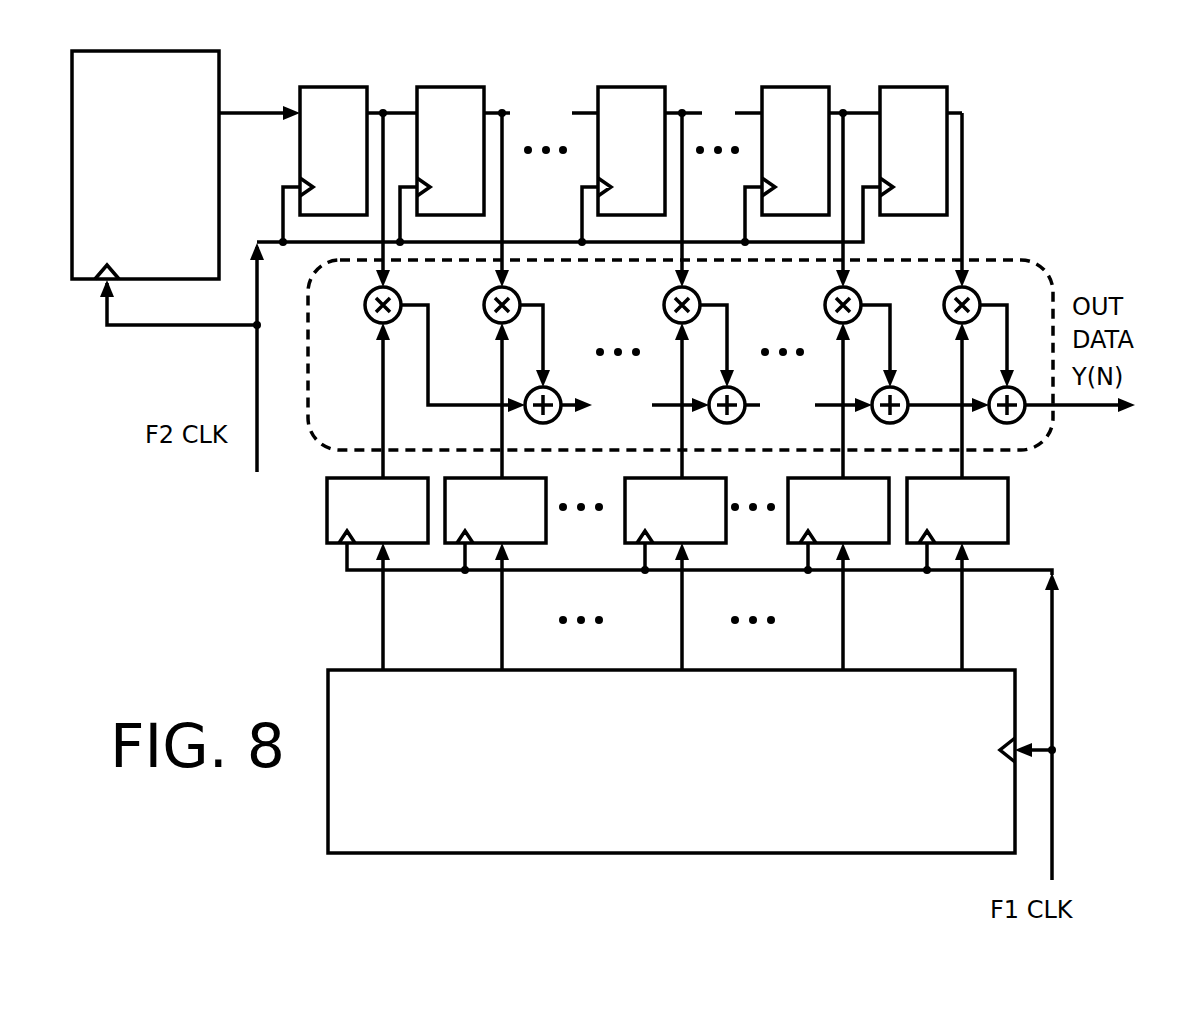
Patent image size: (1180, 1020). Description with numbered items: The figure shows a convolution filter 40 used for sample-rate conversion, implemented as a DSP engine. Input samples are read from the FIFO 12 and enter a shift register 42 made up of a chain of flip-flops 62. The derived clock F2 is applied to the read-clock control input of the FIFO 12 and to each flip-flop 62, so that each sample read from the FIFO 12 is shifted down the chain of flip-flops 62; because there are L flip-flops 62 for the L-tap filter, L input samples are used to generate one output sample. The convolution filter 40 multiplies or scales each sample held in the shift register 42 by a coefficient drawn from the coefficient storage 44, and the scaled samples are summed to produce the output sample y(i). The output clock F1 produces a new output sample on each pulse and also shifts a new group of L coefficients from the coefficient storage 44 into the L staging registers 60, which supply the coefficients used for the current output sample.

The FIFO 12 is at (145, 165).
The convolution filter 40 is at (721, 355).
The shift register 42 is at (657, 147).
The coefficient storage 44 is at (671, 761).
The staging registers 60 is at (667, 510).
The flip-flop 62 is at (623, 151).